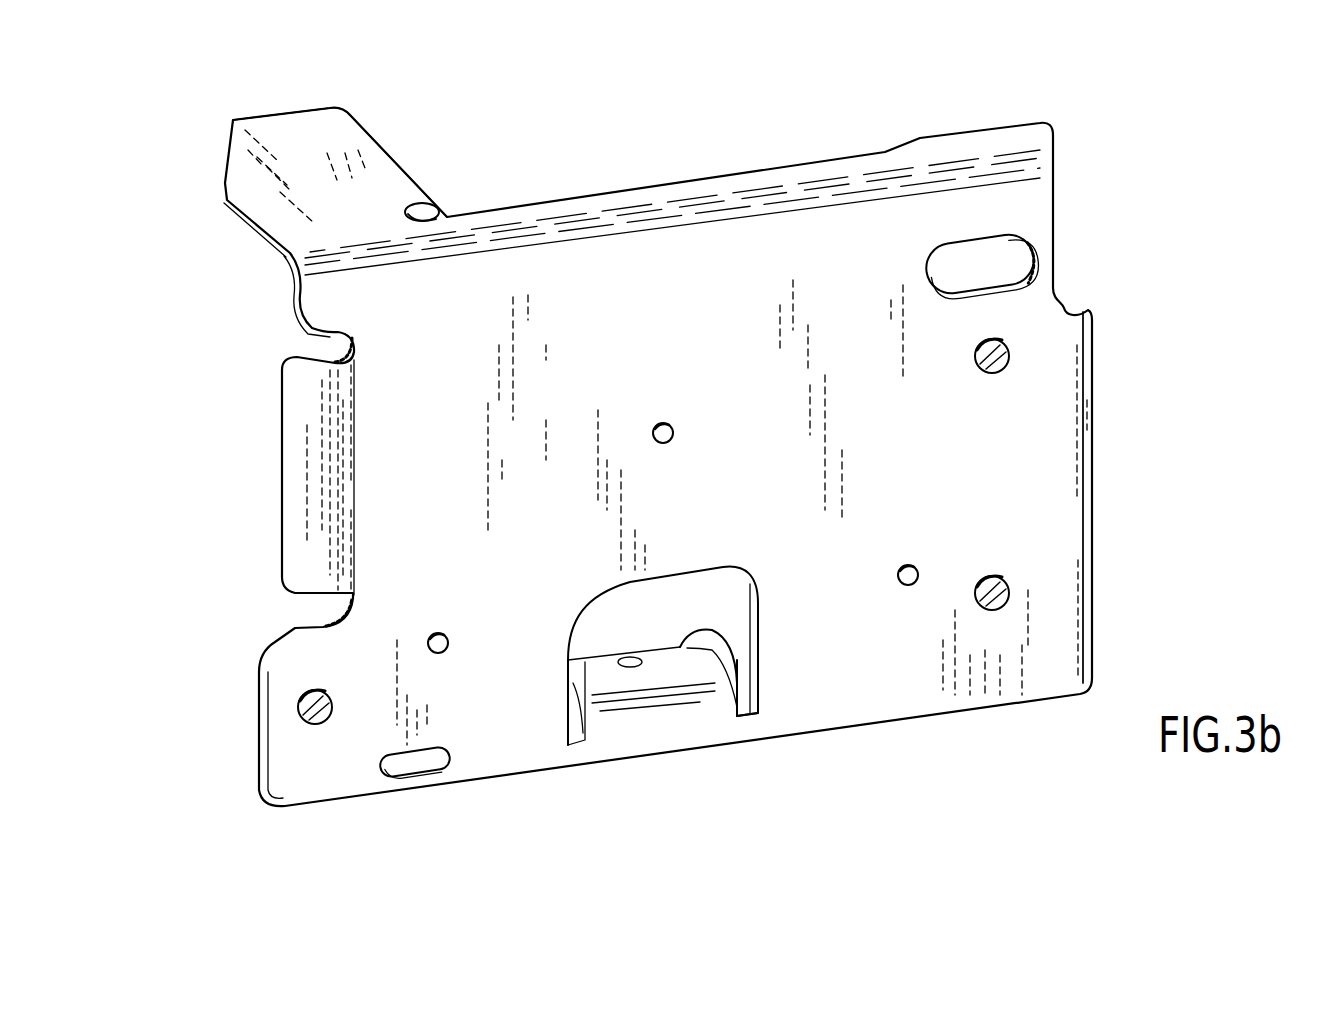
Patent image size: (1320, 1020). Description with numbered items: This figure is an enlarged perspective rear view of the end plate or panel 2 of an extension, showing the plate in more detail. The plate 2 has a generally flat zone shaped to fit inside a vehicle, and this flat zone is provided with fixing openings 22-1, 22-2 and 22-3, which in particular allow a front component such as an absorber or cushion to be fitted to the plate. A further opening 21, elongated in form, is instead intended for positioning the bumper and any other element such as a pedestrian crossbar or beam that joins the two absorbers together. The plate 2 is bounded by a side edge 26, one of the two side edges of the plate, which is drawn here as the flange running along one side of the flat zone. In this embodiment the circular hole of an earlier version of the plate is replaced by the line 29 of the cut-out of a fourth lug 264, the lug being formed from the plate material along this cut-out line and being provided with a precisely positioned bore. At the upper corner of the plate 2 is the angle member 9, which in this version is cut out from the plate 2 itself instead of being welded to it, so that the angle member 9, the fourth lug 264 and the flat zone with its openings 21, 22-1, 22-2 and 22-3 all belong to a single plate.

The end plate 2 is at (663, 160).
The angle member 9 is at (272, 104).
The opening 21 is at (1012, 256).
The fixing opening 22-1 is at (1010, 363).
The fixing opening 22-2 is at (1010, 599).
The fixing opening 22-3 is at (298, 704).
The side edge 26 is at (1098, 497).
The line of the cut-out 29 is at (622, 620).
The fourth lug 264 is at (686, 634).